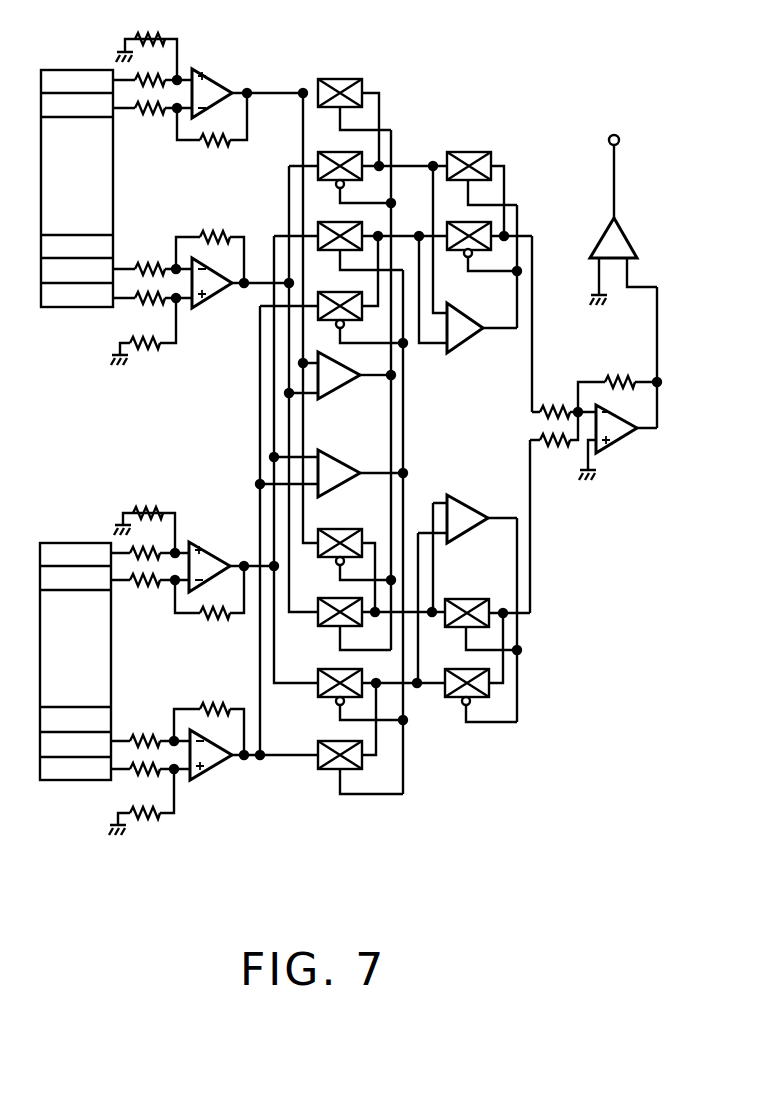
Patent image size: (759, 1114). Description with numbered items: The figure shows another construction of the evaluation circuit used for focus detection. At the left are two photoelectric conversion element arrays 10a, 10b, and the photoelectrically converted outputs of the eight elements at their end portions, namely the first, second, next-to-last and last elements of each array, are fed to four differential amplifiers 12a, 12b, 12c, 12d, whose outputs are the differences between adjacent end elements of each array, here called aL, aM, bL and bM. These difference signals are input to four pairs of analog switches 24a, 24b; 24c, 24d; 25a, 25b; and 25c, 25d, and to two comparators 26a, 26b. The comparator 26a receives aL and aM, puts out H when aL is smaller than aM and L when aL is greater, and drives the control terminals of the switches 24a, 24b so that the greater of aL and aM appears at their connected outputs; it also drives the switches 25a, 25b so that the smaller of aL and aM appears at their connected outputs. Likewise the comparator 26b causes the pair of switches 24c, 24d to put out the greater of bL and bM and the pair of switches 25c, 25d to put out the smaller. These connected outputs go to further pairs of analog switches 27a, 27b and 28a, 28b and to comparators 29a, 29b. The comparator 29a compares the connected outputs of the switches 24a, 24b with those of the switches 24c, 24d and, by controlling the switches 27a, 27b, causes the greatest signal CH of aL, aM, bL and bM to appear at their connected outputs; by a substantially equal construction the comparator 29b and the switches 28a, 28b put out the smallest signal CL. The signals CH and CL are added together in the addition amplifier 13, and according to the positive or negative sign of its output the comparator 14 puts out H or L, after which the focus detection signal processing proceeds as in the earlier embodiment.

The photoelectric conversion element array 10a is at (113, 166).
The photoelectric conversion element array 10b is at (111, 662).
The differential amplifier 12a is at (222, 298).
The differential amplifier 12b is at (222, 80).
The differential amplifier 12c is at (222, 770).
The differential amplifier 12d is at (211, 560).
The analog switch 24a is at (340, 79).
The analog switch 24b is at (345, 152).
The analog switch 24c is at (318, 224).
The analog switch 24d is at (318, 322).
The analog switch 25a is at (340, 529).
The analog switch 25b is at (318, 612).
The analog switch 25c is at (318, 682).
The analog switch 25d is at (318, 768).
The comparator 26a is at (345, 396).
The comparator 26b is at (318, 452).
The analog switch 27a is at (478, 151).
The analog switch 27b is at (475, 222).
The analog switch 28a is at (468, 599).
The analog switch 28b is at (453, 705).
The comparator 29a is at (468, 352).
The comparator 29b is at (467, 495).
The addition amplifier 13 is at (618, 440).
The comparator 14 is at (625, 235).